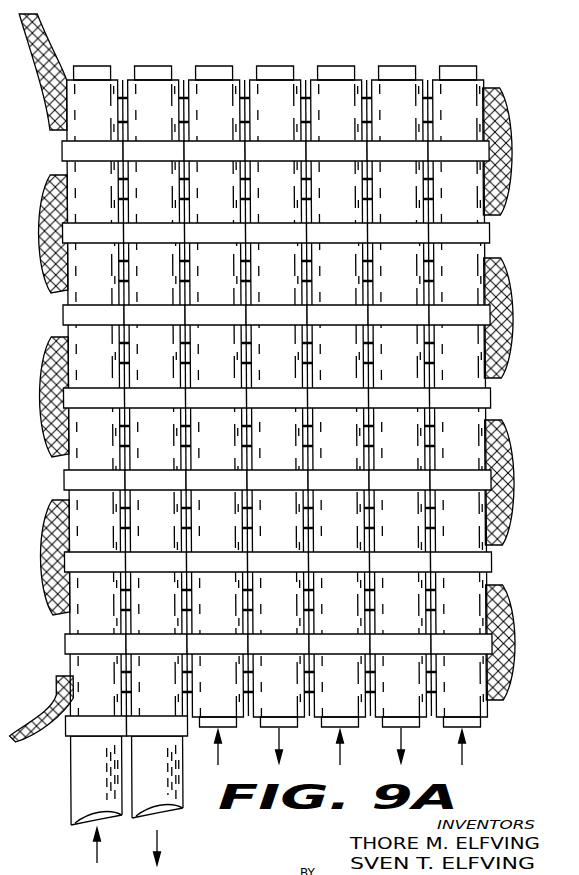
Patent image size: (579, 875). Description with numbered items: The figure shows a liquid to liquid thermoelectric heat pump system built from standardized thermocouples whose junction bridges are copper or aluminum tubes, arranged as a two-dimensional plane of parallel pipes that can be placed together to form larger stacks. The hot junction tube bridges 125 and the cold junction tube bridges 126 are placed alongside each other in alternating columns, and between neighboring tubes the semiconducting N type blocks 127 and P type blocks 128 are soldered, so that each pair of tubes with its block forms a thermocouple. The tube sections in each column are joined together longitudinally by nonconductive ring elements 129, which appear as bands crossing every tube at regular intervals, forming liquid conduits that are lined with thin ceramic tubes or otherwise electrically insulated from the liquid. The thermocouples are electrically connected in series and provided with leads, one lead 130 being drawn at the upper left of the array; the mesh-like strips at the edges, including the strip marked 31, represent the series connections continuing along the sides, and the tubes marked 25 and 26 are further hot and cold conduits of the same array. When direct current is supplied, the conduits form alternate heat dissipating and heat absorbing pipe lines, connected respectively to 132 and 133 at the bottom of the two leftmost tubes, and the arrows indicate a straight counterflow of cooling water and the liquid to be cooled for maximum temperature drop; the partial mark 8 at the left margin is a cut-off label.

The hot junction tube bridge 125 is at (92, 100).
The cold junction tube bridge 126 is at (150, 100).
The N type semiconducting block 127 is at (123, 106).
The P type semiconducting block 128 is at (185, 106).
The nonconductive ring element 129 is at (92, 152).
The lead 130 is at (46, 98).
The mesh strip 31 is at (20, 730).
The tube 25 is at (95, 460).
The tube 26 is at (160, 625).
The heat dissipating pipe line connection 132 is at (93, 787).
The heat absorbing pipe line connection 133 is at (150, 783).
The partial numeral 8 is at (3, 808).